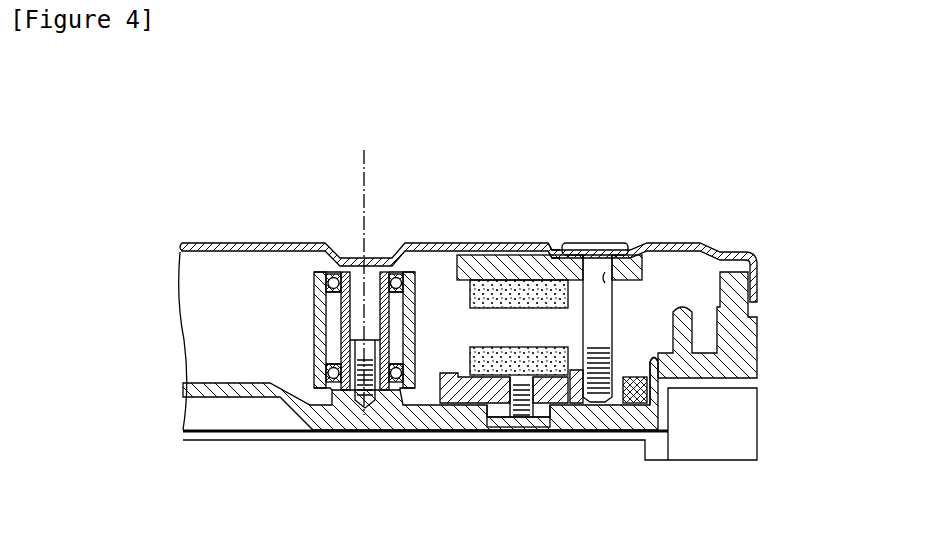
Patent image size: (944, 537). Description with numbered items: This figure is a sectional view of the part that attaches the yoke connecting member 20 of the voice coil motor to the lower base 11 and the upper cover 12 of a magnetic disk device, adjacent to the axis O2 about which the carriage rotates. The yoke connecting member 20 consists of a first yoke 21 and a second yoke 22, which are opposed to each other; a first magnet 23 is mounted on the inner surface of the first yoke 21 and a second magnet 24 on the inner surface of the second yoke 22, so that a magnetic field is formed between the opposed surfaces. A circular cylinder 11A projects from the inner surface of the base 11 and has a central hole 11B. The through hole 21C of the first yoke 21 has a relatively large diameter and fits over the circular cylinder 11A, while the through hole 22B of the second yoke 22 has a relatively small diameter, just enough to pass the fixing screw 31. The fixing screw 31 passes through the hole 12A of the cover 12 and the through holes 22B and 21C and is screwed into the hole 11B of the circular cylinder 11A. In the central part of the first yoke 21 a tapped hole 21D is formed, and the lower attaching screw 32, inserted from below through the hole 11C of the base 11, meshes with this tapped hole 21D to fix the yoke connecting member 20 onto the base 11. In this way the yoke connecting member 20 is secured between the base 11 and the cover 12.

The axis O2 is at (360, 172).
The lower base 11 is at (757, 345).
The circular cylinder 11A is at (653, 433).
The central hole 11B is at (648, 358).
The hole of the base 11C is at (495, 412).
The upper cover 12 is at (688, 245).
The hole of the cover 12A is at (580, 248).
The yoke connecting member 20 is at (463, 243).
The first yoke 21 is at (450, 405).
The through hole 21C is at (575, 405).
The tapped hole 21D is at (527, 377).
The second yoke 22 is at (484, 242).
The through hole 22B is at (611, 287).
The first magnet 23 is at (470, 362).
The second magnet 24 is at (470, 296).
The fixing screw 31 is at (600, 245).
The lower attaching screw 32 is at (517, 427).